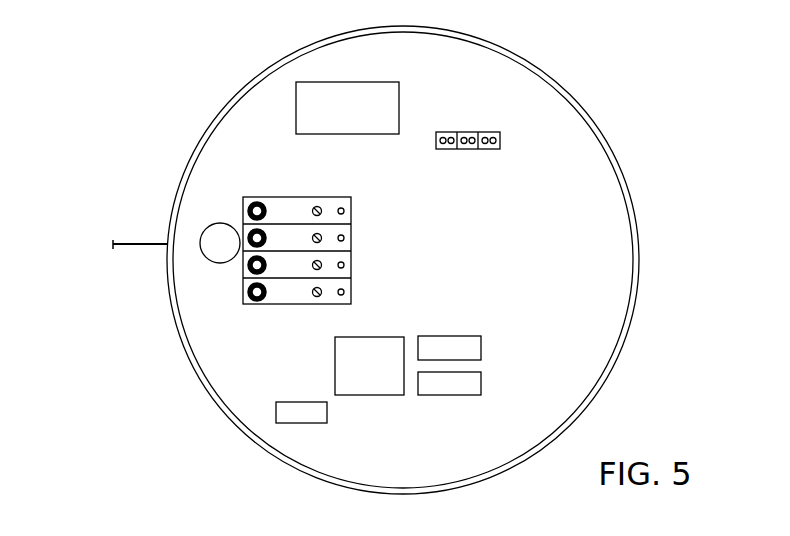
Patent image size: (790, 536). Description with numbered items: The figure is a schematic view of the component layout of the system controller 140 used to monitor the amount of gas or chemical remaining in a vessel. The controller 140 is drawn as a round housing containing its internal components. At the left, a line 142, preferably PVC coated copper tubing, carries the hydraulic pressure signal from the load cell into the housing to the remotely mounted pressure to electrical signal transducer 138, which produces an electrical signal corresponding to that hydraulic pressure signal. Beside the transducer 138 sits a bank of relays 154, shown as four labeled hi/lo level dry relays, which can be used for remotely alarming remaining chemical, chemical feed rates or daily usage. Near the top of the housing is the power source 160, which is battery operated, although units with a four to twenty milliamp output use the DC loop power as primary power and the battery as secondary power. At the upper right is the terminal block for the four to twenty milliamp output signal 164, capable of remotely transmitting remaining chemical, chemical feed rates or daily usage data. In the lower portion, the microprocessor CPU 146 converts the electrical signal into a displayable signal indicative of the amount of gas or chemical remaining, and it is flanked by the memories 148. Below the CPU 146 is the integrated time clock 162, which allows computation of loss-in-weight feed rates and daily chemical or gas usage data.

The system controller 140 is at (182, 420).
The power source 160 is at (340, 82).
The remotely mounted pressure to electrical signal transducer 138 is at (210, 226).
The line 142 is at (135, 244).
The relays 154 is at (297, 196).
The 4–20 mA output signal 164 is at (468, 149).
The microprocessor CPU 146 is at (348, 360).
The memories 148 is at (477, 345).
The integrated time clock 162 is at (303, 415).